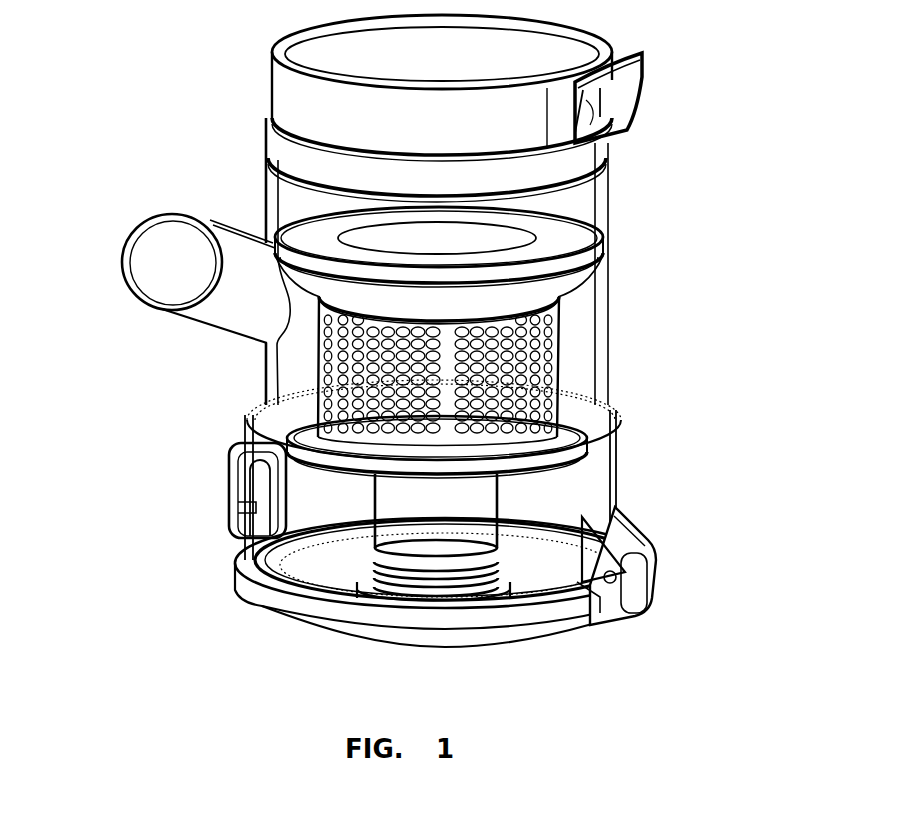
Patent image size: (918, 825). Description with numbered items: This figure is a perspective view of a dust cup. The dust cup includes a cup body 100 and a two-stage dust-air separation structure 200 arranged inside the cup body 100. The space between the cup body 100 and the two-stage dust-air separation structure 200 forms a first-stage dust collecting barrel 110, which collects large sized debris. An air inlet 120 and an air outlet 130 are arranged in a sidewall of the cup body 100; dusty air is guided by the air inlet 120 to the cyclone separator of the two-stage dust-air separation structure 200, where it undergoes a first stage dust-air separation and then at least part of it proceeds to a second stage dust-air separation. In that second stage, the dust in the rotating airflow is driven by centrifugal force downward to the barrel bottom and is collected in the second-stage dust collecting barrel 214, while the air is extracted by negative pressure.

The cup body 100 is at (270, 167).
The first-stage dust collecting barrel 110 is at (535, 508).
The air inlet 120 is at (165, 243).
The air outlet 130 is at (607, 90).
The two-stage dust-air separation structure 200 is at (520, 335).
The second-stage dust collecting barrel 214 is at (428, 508).